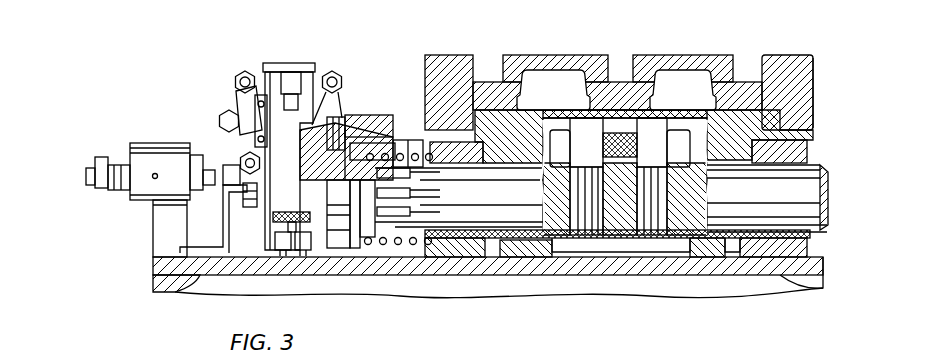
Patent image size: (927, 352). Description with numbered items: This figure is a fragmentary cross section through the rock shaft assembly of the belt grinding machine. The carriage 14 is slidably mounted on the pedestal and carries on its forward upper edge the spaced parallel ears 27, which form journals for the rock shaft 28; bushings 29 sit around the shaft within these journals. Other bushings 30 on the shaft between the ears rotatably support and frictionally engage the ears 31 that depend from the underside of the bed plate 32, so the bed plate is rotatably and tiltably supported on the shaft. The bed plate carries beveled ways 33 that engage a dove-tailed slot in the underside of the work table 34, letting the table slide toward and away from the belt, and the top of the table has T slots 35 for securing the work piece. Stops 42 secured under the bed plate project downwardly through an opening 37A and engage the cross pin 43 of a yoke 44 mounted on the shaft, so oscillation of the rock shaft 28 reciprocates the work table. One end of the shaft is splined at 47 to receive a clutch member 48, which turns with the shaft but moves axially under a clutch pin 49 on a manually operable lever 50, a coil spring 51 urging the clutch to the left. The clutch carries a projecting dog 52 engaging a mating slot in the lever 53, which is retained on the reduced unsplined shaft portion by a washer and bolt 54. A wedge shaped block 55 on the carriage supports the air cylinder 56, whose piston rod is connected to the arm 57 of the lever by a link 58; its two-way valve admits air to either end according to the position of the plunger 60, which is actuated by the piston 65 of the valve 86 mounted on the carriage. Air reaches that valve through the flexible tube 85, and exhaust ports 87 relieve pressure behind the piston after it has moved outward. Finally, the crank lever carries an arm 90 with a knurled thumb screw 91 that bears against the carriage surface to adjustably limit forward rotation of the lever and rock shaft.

The carriage 14 is at (207, 272).
The ears 27 is at (807, 144).
The rock shaft 28 is at (813, 195).
The bushings 29 is at (810, 158).
The bushings 30 is at (550, 235).
The ears 31 is at (533, 248).
The bed plate 32 is at (813, 79).
The beveled ways 33 is at (813, 104).
The work table 34 is at (793, 58).
The T slots 35 is at (477, 70).
The opening 37A is at (560, 128).
The stops 42 is at (612, 157).
The cross pin 43 is at (630, 154).
The yoke 44 is at (600, 214).
The splined portion 47 is at (403, 198).
The clutch member 48 is at (358, 250).
The clutch pin 49 is at (337, 140).
The manually operable lever 50 is at (373, 128).
The coil spring 51 is at (402, 151).
The projecting dog 52 is at (308, 195).
The lever 53 is at (306, 98).
The washer and bolt 54 is at (246, 208).
The wedge shaped block 55 is at (230, 191).
The air cylinder 56 is at (233, 101).
The arm 57 is at (270, 60).
The link 58 is at (287, 61).
The plunger 60 is at (213, 173).
The piston 65 is at (193, 152).
The flexible tube 85 is at (89, 168).
The valve 86 is at (137, 147).
The exhaust ports 87 is at (154, 179).
The arm 90 is at (280, 247).
The knurled thumb screw 91 is at (295, 210).